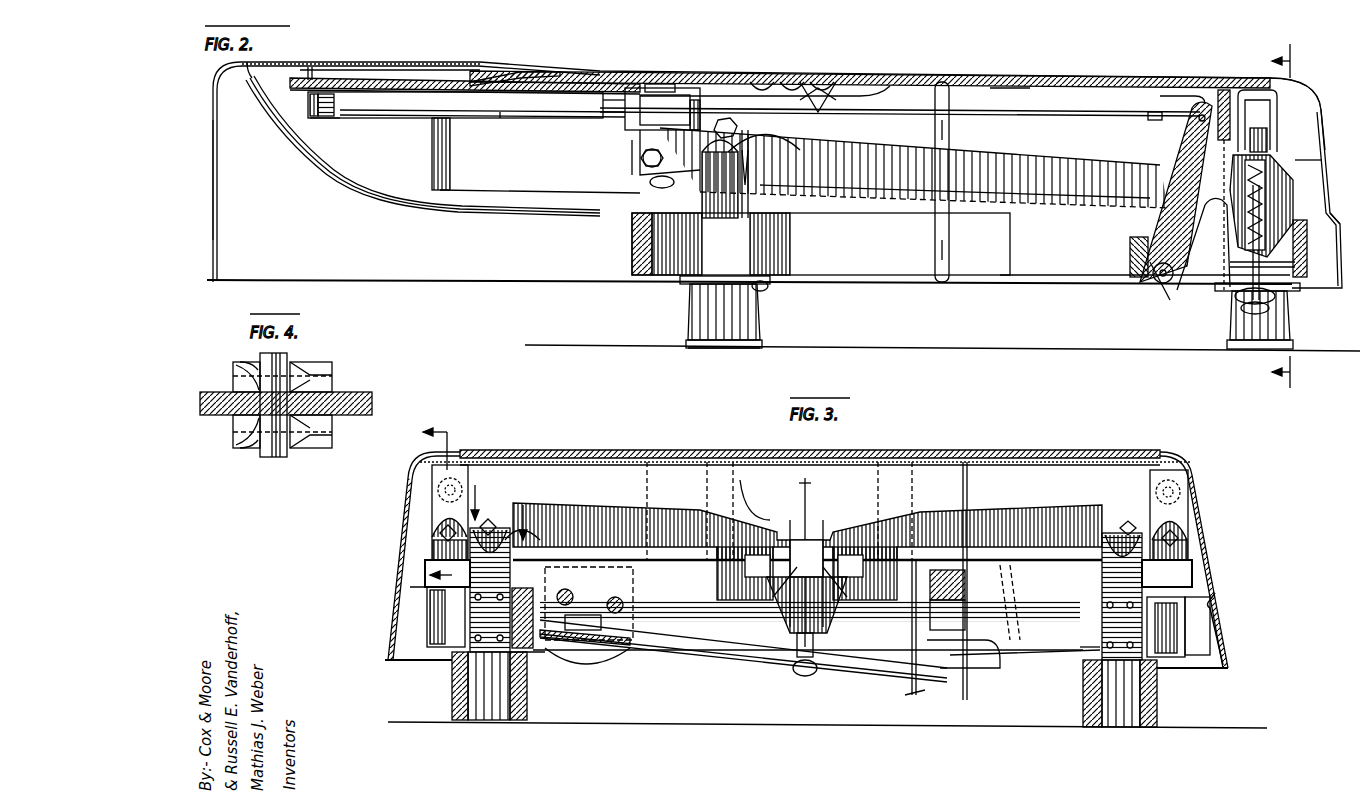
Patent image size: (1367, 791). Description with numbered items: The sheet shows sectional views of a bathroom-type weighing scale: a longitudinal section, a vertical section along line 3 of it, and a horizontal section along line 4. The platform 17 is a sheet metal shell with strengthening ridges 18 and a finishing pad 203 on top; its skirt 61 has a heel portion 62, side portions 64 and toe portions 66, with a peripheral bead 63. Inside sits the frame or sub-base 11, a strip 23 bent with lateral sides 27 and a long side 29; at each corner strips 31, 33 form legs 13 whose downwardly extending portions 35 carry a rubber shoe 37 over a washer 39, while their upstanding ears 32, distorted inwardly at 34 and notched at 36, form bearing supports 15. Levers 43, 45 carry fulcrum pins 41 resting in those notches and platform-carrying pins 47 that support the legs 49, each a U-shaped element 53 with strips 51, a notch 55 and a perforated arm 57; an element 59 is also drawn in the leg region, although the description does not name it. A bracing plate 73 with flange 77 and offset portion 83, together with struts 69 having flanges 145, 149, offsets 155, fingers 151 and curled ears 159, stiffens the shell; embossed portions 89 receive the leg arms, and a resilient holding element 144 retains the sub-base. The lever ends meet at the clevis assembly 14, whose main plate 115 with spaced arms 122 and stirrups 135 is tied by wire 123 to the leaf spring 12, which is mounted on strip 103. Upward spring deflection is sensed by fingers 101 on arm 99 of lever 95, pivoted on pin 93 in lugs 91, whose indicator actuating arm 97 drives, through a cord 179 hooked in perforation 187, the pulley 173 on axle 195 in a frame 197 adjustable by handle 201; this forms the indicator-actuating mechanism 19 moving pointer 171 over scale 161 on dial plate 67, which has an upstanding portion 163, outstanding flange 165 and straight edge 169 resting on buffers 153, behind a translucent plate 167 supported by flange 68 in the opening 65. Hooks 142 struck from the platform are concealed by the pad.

In FIG. 2, the section line 3— 3 is at (1291, 212).
In FIG. 3, the section line 4— 4 is at (505, 512).
In FIG. 2, the frame or sub-base 11 is at (590, 250).
In FIG. 2, the leaf spring 12 is at (1230, 318).
In FIG. 3, the leaf spring 12 is at (700, 652).
In FIG. 2, the legs 13 is at (702, 348).
In FIG. 3, the legs 13 is at (490, 722).
In FIG. 3, the clevis assembly 14 is at (837, 697).
In FIG. 2, the bearing supports 15 is at (715, 240).
In FIG. 2, the platform 17 is at (1080, 76).
In FIG. 3, the platform 17 is at (670, 450).
In FIG. 2, the strengthening ridges 18 is at (818, 112).
In FIG. 2, the indicator-actuating mechanism 19 is at (590, 168).
In FIG. 2, the sheet metal strip 23 is at (1065, 286).
In FIG. 3, the sheet metal strip 23 is at (440, 628).
In FIG. 3, the lateral sides 27 is at (412, 592).
In FIG. 2, the long side 29 is at (1308, 238).
In FIG. 2, the sheet metal strips 31 is at (752, 207).
In FIG. 3, the sheet metal strips 31 is at (500, 580).
In FIG. 2, the upstanding ears 32 is at (738, 138).
In FIG. 4, the upstanding ears 32 is at (333, 366).
In FIG. 2, the sheet metal strips 33 is at (702, 207).
In FIG. 2, the inwardly distorted portions 34 is at (760, 160).
In FIG. 4, the inwardly distorted portions 34 is at (250, 361).
In FIG. 3, the inwardly distorted portions 34 is at (520, 525).
In FIG. 3, the downwardly extending portions 35 is at (455, 690).
In FIG. 4, the pin-receiving notches 36 is at (234, 376).
In FIG. 3, the pin-receiving notches 36 is at (482, 528).
In FIG. 2, the shoe 37 is at (690, 310).
In FIG. 3, the shoe 37 is at (527, 693).
In FIG. 2, the washer 39 is at (765, 290).
In FIG. 3, the washer 39 is at (548, 658).
In FIG. 4, the fulcrum pin 41 is at (268, 458).
In FIG. 3, the fulcrum pin 41 is at (494, 522).
In FIG. 2, the levers 43 is at (1034, 170).
In FIG. 3, the levers 43 is at (740, 600).
In FIG. 2, the levers 45 is at (1268, 136).
In FIG. 4, the levers 45 is at (373, 403).
In FIG. 3, the levers 45 is at (580, 510).
In FIG. 3, the platform-carrying pin 47 is at (440, 540).
In FIG. 2, the platform-carrying legs 49 is at (218, 175).
In FIG. 2, the sheet metal strips 51 is at (1258, 90).
In FIG. 2, the U-shaped element 53 is at (645, 165).
In FIG. 3, the U-shaped element 53 is at (436, 505).
In FIG. 3, the notch 55 is at (436, 548).
In FIG. 2, the arm 57 is at (648, 188).
In FIG. 3, the arm 57 is at (425, 575).
In FIG. 3, the cam lug 59 is at (435, 525).
In FIG. 2, the skirt 61 is at (1320, 140).
In FIG. 3, the skirt 61 is at (1200, 615).
In FIG. 2, the skirt portion 62 is at (1323, 112).
In FIG. 2, the peripheral bead 63 is at (1336, 218).
In FIG. 3, the peripheral bead 63 is at (1218, 596).
In FIG. 2, the side portions 64 is at (876, 284).
In FIG. 3, the side portions 64 is at (408, 545).
In FIG. 2, the opening 65 is at (330, 63).
In FIG. 2, the skirt portions 66 is at (510, 276).
In FIG. 2, the dial plate 67 is at (345, 116).
In FIG. 2, the plate-supporting flange 68 is at (425, 70).
In FIG. 2, the struts 69 is at (1037, 200).
In FIG. 2, the bracing plate 73 is at (1250, 285).
In FIG. 3, the bracing plate 73 is at (1020, 636).
In FIG. 2, the flange 77 is at (1300, 84).
In FIG. 2, the offset portion 83 is at (1192, 248).
In FIG. 3, the offset portion 83 is at (680, 632).
In FIG. 2, the offset portions 89 is at (1226, 90).
In FIG. 3, the offset portions 89 is at (432, 478).
In FIG. 2, the lugs 91 is at (1165, 283).
In FIG. 2, the pin 93 is at (1160, 287).
In FIG. 3, the pin 93 is at (910, 685).
In FIG. 2, the lever 95 is at (1130, 255).
In FIG. 2, the indicator actuating arm 97 is at (1190, 140).
In FIG. 3, the indicator actuating arm 97 is at (810, 490).
In FIG. 2, the arm 99 is at (1296, 265).
In FIG. 3, the arm 99 is at (945, 600).
In FIG. 2, the fingers 101 is at (1268, 310).
In FIG. 3, the fingers 101 is at (955, 645).
In FIG. 3, the sheet metal strip 103 is at (590, 647).
In FIG. 2, the main plate 115 is at (1275, 298).
In FIG. 3, the main plate 115 is at (780, 645).
In FIG. 3, the spaced arms 122 is at (830, 520).
In FIG. 3, the wire 123 is at (800, 676).
In FIG. 2, the stirrups 135 is at (1290, 170).
In FIG. 3, the stirrups 135 is at (790, 520).
In FIG. 2, the hooks 142 is at (950, 133).
In FIG. 3, the hooks 142 is at (706, 484).
In FIG. 2, the resilient holding element 144 is at (950, 252).
In FIG. 3, the resilient holding element 144 is at (990, 680).
In FIG. 2, the flange 145 is at (1160, 97).
In FIG. 2, the flanges 149 is at (1008, 78).
In FIG. 2, the fingers 151 is at (625, 145).
In FIG. 2, the buffers 153 is at (638, 132).
In FIG. 2, the offsets 155 is at (782, 82).
In FIG. 2, the ears 159 is at (430, 162).
In FIG. 2, the scale 161 is at (345, 112).
In FIG. 2, the upstanding portion 163 is at (296, 116).
In FIG. 2, the outstanding flange 165 is at (275, 100).
In FIG. 2, the translucent plate 167 is at (375, 80).
In FIG. 2, the straight edge 169 is at (615, 100).
In FIG. 2, the pointer 171 is at (500, 118).
In FIG. 2, the pulley 173 is at (685, 92).
In FIG. 2, the flexible driving element 179 is at (1050, 114).
In FIG. 2, the perforation 187 is at (1196, 120).
In FIG. 2, the pulley axle 195 is at (650, 86).
In FIG. 2, the frame 197 is at (722, 96).
In FIG. 2, the handle 201 is at (482, 70).
In FIG. 3, the handle 201 is at (970, 452).
In FIG. 2, the finishing pad 203 is at (940, 80).